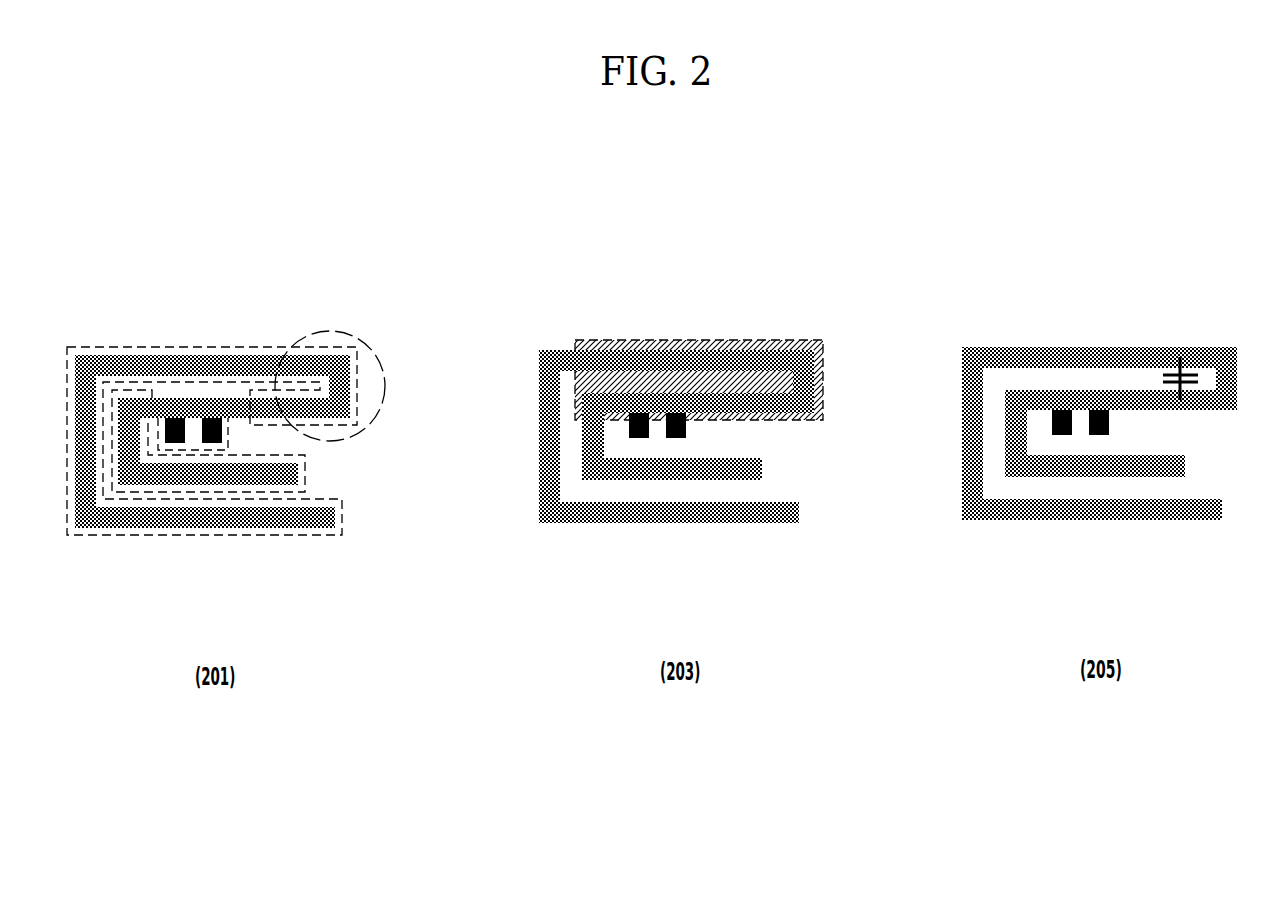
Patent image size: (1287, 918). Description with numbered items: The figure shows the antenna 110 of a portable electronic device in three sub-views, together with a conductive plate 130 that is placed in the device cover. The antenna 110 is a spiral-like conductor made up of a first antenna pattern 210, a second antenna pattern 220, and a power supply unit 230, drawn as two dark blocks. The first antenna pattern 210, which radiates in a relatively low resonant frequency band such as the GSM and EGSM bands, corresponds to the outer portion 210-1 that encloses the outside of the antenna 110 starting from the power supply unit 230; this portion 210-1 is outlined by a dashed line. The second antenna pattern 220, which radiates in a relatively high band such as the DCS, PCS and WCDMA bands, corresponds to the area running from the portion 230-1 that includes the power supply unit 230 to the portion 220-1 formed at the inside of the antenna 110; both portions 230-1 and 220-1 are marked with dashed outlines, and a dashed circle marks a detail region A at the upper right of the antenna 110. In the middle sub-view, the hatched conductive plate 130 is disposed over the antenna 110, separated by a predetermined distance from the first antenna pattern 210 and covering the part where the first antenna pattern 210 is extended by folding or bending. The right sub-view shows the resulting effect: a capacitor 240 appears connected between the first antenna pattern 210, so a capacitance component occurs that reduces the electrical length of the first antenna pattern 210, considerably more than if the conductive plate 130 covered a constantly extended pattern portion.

The antenna 110 is at (233, 623).
The conductive plate 130 is at (760, 341).
The first antenna pattern 210 is at (90, 357).
The portion enclosing the outside of the antenna 210-1 is at (93, 537).
The second antenna pattern 220 is at (300, 463).
The portion formed at the inside of the antenna 220-1 is at (305, 488).
The power supply unit 230 is at (173, 443).
The portion including the power supply unit 230-1 is at (203, 412).
The capacitor 240 is at (1180, 357).
The region A is at (318, 332).